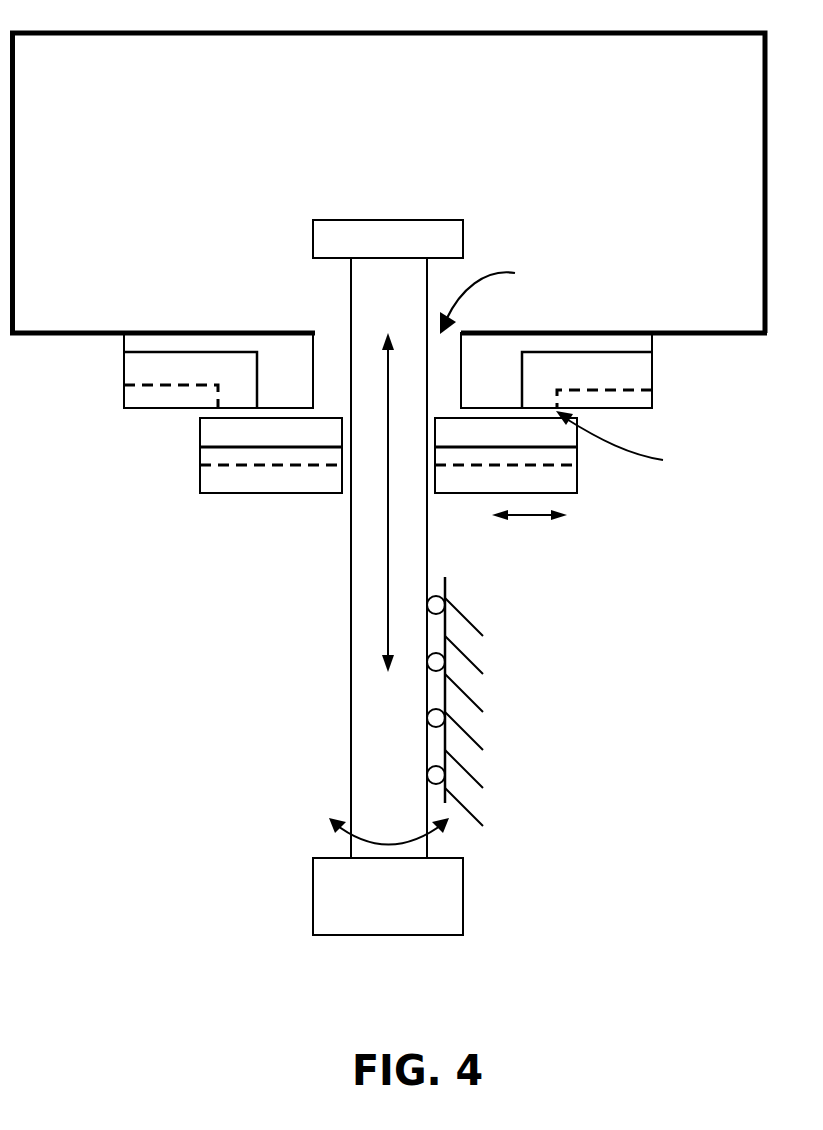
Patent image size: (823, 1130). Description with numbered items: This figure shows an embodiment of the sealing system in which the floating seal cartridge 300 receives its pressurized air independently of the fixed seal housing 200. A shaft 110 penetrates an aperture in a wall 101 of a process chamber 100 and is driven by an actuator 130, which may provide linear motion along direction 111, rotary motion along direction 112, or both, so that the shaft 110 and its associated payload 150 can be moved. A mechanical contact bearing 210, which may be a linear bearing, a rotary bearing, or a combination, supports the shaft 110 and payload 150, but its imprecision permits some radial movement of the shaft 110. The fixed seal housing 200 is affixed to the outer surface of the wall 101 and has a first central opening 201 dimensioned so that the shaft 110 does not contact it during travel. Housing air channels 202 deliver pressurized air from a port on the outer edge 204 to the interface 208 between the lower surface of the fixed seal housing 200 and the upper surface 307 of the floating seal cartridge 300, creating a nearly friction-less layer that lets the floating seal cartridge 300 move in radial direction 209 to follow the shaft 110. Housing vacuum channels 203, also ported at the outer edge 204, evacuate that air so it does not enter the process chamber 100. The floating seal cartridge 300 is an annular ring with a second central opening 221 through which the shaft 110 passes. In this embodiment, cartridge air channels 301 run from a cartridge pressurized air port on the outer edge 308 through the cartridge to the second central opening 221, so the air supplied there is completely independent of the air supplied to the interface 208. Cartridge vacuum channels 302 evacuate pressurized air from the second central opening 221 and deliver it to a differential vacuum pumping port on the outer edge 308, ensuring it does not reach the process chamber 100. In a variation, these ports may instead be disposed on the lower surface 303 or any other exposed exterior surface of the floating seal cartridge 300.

The process chamber 100 is at (88, 80).
The wall 101 is at (167, 331).
The shaft 110 is at (350, 760).
The direction 111 is at (428, 523).
The direction 112 is at (408, 838).
The actuator 130 is at (409, 910).
The payload 150 is at (409, 251).
The fixed seal housing 200 is at (600, 410).
The first central opening 201 is at (501, 296).
The housing air channels 202 is at (637, 393).
The housing vacuum channels 203 is at (645, 353).
The outer edge 204 is at (124, 368).
The interface 208 is at (631, 446).
The radial direction 209 is at (529, 533).
The mechanical contact bearing 210 is at (446, 788).
The second central opening 221 is at (346, 500).
The floating seal cartridge 300 is at (577, 483).
The cartridge air channels 301 is at (200, 464).
The cartridge vacuum channels 302 is at (200, 440).
The lower surface 303 is at (238, 495).
The upper surface 307 is at (200, 415).
The outer edge 308 is at (577, 455).